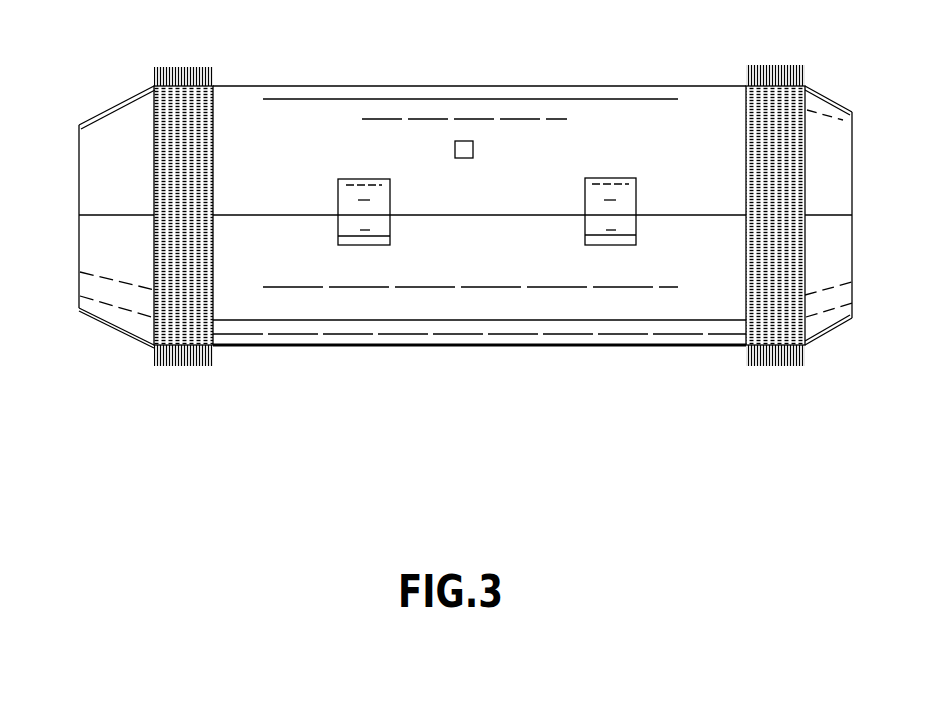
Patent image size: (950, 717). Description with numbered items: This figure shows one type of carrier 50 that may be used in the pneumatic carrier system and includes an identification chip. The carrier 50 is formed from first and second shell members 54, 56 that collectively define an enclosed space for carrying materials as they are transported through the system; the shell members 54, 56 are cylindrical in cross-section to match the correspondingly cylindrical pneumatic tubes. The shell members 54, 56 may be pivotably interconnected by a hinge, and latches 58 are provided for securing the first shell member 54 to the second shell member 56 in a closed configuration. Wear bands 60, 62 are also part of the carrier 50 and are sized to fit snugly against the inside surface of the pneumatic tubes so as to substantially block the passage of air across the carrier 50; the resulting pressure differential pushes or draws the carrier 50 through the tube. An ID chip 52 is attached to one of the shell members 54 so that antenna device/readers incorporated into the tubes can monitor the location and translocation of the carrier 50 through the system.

The carrier 50 is at (118, 82).
The ID chip 52 is at (463, 140).
The first shell member 54 is at (613, 114).
The second shell member 56 is at (637, 347).
The latches 58 is at (390, 222).
The wear band 60 is at (214, 357).
The wear band 62 is at (762, 368).